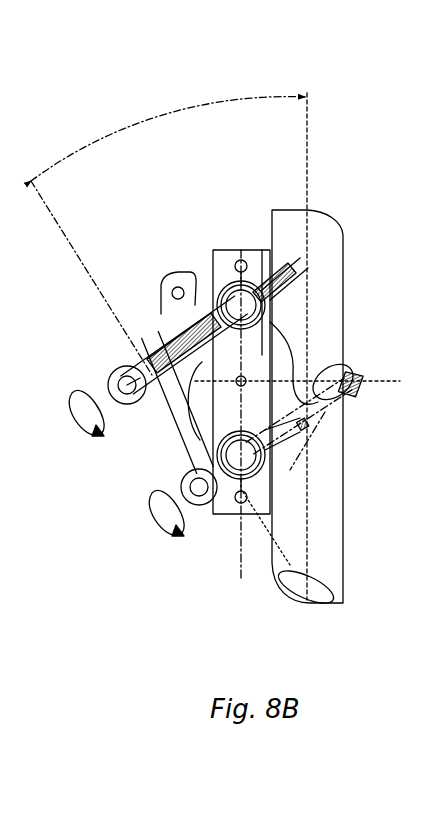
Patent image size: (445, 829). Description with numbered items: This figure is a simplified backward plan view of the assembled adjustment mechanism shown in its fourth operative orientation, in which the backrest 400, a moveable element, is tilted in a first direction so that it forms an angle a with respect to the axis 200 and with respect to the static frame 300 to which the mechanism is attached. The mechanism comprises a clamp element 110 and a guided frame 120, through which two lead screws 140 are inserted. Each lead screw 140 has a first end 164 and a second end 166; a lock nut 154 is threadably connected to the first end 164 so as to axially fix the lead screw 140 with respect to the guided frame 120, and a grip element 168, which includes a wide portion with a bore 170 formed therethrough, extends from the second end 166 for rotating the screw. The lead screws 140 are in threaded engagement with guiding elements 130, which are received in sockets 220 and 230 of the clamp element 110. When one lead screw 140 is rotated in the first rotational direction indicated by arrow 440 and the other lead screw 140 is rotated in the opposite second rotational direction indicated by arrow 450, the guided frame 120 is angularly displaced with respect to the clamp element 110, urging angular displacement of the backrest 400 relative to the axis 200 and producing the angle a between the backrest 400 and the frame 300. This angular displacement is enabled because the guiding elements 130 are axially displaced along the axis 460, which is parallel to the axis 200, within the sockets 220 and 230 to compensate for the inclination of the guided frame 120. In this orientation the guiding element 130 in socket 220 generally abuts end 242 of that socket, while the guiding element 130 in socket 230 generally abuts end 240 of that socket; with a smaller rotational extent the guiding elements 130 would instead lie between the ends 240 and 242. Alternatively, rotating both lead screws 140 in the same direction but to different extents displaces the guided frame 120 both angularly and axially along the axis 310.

The angle a is at (168, 233).
The clamp element 110 is at (250, 264).
The guided frame 120 is at (196, 300).
The guiding elements 130 is at (262, 310).
The lead screws 140 is at (163, 325).
The lock nut 154 is at (262, 273).
The first end 164 is at (255, 284).
The second end 166 is at (123, 345).
The grip element 168 is at (110, 374).
The bore 170 is at (110, 385).
The axis 200 is at (305, 131).
The socket 220 is at (278, 458).
The socket 230 is at (272, 335).
The end 240 is at (255, 355).
The end 242 is at (215, 268).
The frame 300 is at (320, 238).
The axis 310 is at (362, 386).
The backrest 400 is at (104, 287).
The arrow 440 is at (65, 418).
The arrow 450 is at (146, 517).
The axis 460 is at (238, 571).